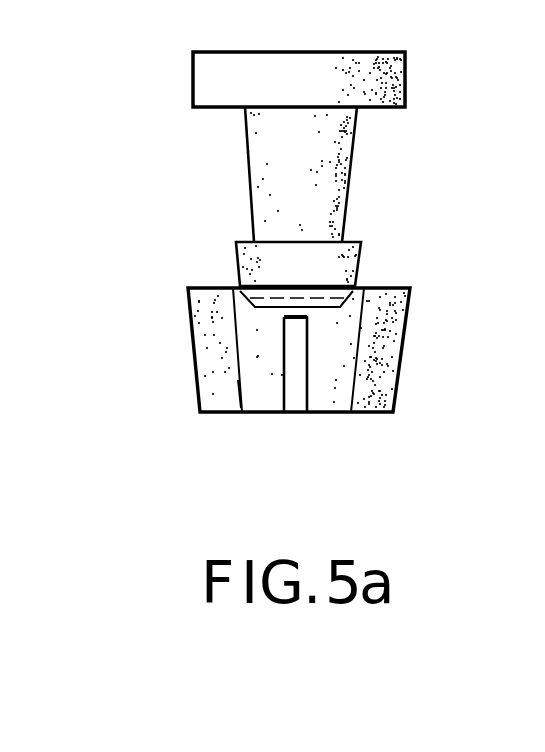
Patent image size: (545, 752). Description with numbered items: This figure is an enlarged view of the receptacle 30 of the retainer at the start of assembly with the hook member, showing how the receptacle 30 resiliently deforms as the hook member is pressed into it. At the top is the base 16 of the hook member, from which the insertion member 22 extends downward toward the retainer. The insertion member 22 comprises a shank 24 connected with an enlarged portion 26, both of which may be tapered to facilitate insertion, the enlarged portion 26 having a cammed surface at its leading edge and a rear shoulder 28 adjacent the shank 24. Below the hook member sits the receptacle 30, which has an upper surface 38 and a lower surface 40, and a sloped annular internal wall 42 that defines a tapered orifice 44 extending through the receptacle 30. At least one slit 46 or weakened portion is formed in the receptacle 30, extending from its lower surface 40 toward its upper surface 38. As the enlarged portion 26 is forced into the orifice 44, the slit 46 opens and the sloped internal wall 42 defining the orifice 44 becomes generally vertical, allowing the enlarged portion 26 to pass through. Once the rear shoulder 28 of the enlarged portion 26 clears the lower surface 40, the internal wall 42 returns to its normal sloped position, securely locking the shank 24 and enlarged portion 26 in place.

The base 16 is at (388, 80).
The insertion member 22 is at (343, 208).
The shank 24 is at (352, 153).
The enlarged portion 26 is at (348, 262).
The rear shoulder 28 is at (250, 243).
The receptacle 30 is at (208, 345).
The upper surface 38 is at (212, 287).
The lower surface 40 is at (237, 410).
The sloped annular internal wall 42 is at (358, 352).
The tapered orifice 44 is at (262, 383).
The slit 46 is at (308, 382).